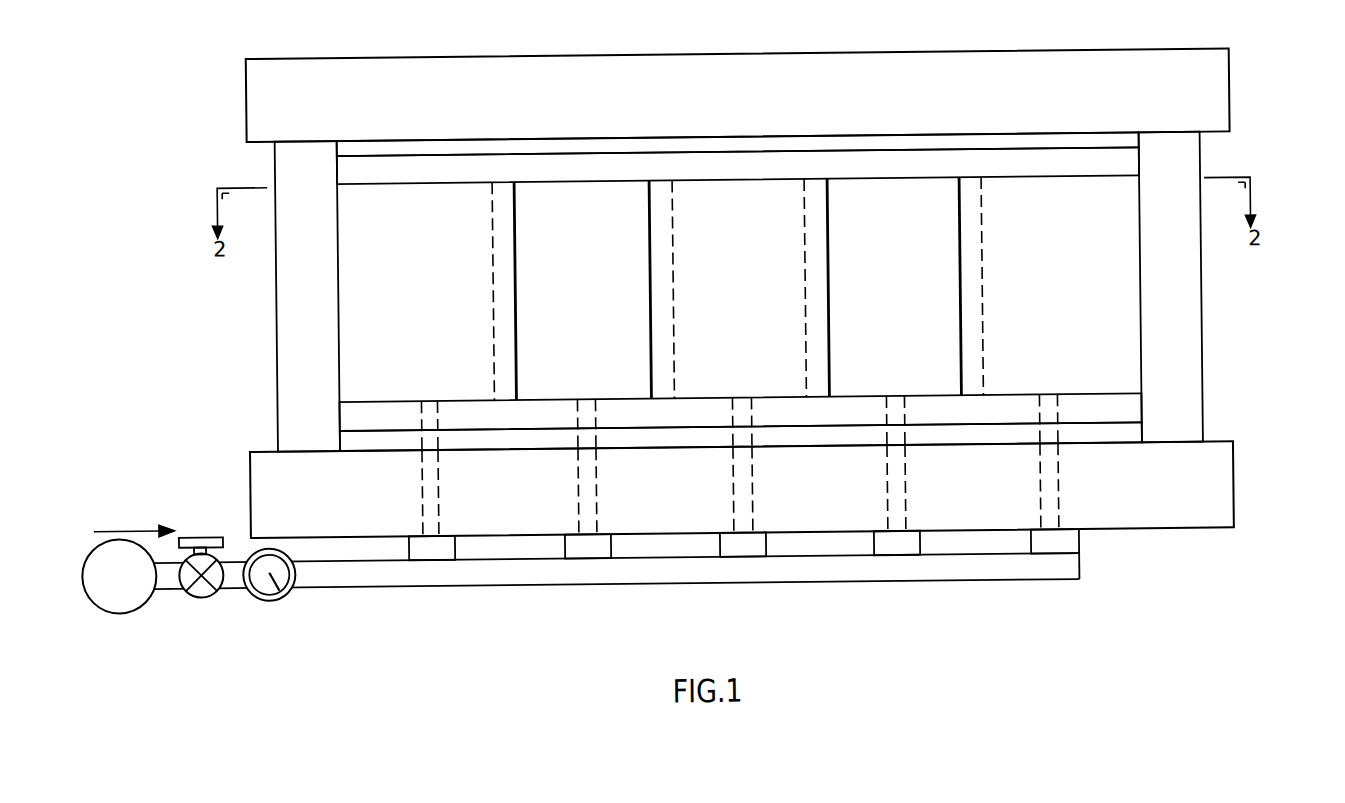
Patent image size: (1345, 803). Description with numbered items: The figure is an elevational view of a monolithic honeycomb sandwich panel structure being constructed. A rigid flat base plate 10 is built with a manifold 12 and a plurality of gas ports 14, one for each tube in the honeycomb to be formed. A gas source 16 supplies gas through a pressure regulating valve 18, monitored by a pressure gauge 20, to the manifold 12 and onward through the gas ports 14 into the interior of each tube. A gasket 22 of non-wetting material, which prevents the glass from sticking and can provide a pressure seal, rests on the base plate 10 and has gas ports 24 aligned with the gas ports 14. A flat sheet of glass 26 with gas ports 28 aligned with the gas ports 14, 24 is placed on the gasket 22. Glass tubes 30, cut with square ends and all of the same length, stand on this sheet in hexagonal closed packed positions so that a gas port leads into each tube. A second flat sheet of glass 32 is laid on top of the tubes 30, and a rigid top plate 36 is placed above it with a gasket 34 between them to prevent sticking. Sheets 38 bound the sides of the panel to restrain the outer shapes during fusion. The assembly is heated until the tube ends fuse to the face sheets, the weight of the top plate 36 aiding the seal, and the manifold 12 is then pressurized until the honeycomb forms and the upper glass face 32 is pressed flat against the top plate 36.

The base plate 10 is at (645, 521).
The manifold 12 is at (1078, 573).
The gas ports 14 is at (438, 510).
The gas source 16 is at (113, 613).
The pressure regulating valve 18 is at (207, 598).
The pressure gauge 20 is at (287, 598).
The gasket 22 is at (340, 446).
The gas ports 24 is at (418, 440).
The flat sheet of glass 26 is at (340, 421).
The gas ports 28 is at (442, 410).
The glass tubes 30 is at (495, 217).
The second flat sheet of glass 32 is at (340, 173).
The gasket 34 is at (340, 154).
The top plate 36 is at (727, 116).
The sheets 38 is at (279, 300).